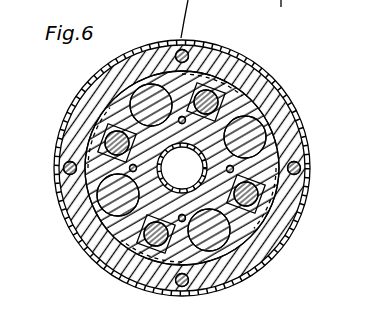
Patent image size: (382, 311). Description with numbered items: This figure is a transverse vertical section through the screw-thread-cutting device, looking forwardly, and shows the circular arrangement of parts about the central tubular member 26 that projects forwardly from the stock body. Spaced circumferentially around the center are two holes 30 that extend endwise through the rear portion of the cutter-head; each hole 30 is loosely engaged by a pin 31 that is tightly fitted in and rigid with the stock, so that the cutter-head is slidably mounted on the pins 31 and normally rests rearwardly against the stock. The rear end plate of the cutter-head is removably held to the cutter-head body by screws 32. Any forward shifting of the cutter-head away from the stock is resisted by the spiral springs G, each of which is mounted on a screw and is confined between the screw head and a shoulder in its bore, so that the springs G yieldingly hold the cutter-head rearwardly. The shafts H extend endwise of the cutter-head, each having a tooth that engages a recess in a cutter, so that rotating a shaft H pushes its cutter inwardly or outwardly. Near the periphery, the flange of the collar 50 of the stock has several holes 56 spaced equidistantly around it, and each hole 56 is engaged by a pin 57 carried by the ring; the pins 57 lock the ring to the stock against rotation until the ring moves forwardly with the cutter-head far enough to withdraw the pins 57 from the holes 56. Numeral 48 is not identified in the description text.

The tubular member 26 is at (166, 186).
The holes 30 is at (246, 104).
The pins 31 is at (209, 96).
The screws 32 is at (179, 123).
The bolt 48 is at (228, 292).
The collar 50 is at (285, 290).
The holes 56 is at (188, 54).
The pins 57 is at (64, 168).
The spiral springs G is at (104, 139).
The shaft H is at (140, 103).